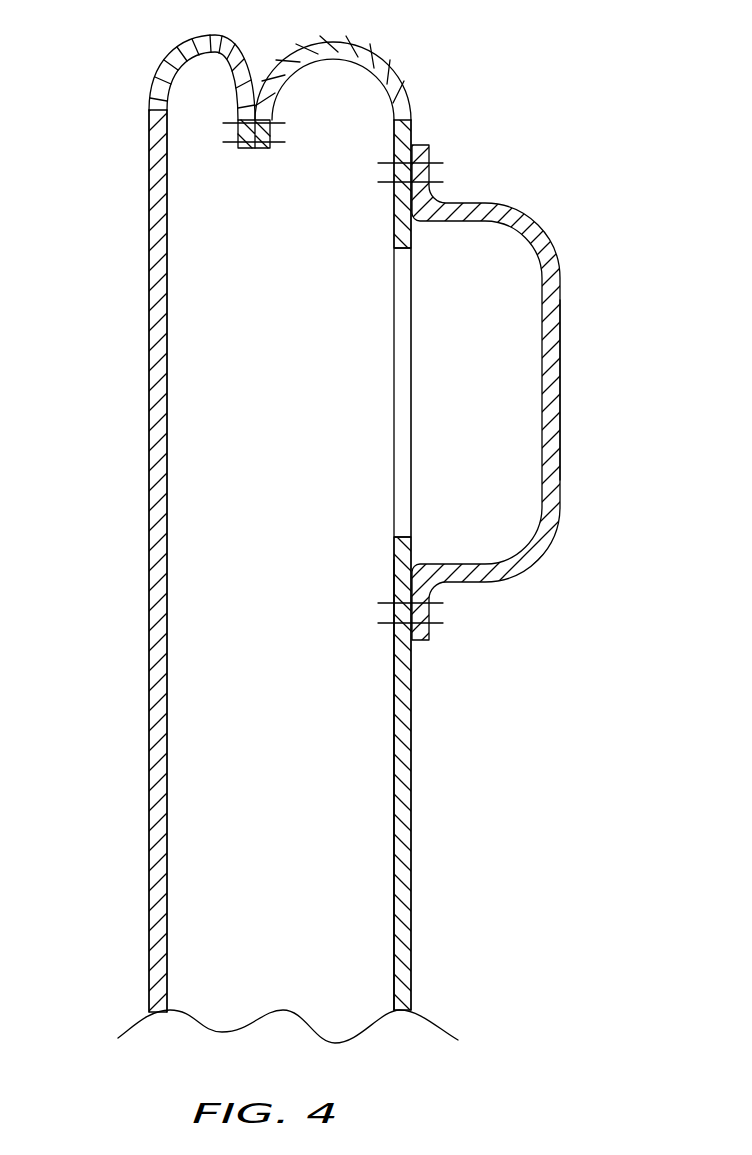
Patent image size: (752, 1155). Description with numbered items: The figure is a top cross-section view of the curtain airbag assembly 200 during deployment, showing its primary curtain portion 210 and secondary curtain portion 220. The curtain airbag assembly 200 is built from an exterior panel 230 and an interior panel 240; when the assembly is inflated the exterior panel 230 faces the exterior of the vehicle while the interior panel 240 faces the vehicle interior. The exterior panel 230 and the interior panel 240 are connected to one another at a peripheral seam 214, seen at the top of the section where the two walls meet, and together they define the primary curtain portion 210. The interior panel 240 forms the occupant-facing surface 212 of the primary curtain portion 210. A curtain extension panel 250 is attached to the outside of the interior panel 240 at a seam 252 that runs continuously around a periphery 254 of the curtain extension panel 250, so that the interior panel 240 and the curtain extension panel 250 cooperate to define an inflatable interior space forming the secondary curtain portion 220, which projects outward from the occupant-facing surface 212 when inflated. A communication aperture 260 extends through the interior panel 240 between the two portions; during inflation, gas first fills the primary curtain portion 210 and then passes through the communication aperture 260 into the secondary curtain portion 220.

The curtain airbag assembly 200 is at (134, 64).
The primary curtain portion 210 is at (365, 505).
The occupant-facing surface 212 is at (412, 812).
The peripheral seam 214 is at (273, 129).
The secondary curtain portion 220 is at (504, 377).
The exterior panel 230 is at (149, 425).
The interior panel 240 is at (404, 922).
The curtain extension panel 250 is at (560, 380).
The seam 252 is at (432, 187).
The periphery 254 is at (420, 143).
The communication aperture 260 is at (422, 435).